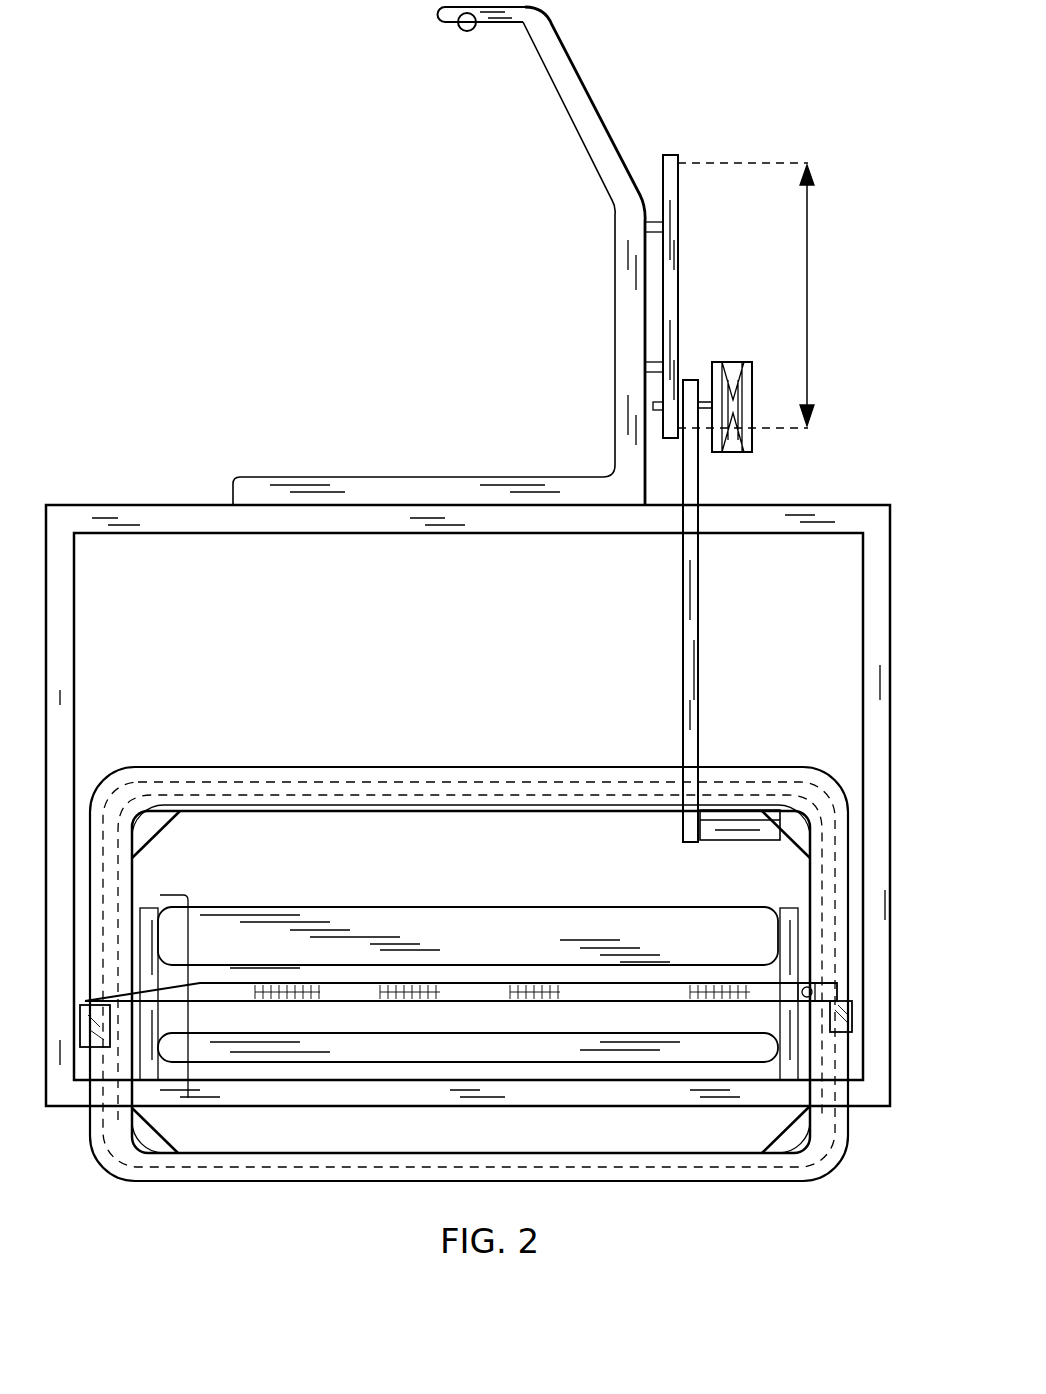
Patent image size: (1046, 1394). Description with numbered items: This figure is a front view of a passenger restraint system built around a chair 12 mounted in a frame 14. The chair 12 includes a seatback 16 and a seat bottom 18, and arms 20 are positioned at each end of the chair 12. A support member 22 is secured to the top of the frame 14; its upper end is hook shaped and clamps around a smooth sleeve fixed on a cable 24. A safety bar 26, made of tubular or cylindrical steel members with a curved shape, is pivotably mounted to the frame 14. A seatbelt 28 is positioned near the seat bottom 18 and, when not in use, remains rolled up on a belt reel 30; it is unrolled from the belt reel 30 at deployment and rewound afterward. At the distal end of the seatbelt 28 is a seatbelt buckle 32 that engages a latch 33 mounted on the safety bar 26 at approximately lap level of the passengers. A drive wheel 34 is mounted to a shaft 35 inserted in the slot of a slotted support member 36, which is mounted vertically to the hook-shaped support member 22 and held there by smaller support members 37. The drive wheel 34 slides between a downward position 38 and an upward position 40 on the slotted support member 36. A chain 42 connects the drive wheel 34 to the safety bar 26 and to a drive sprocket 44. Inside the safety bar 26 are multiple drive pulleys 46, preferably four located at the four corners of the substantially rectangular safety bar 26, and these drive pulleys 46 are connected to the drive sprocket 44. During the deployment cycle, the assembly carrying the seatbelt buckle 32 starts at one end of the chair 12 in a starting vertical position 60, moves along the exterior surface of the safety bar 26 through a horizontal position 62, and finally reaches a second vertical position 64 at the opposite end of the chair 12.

The chair 12 is at (200, 998).
The frame 14 is at (875, 625).
The seatback 16 is at (430, 925).
The seat bottom 18 is at (570, 1045).
The arms 20 is at (802, 1165).
The support member 22 is at (583, 108).
The cable 24 is at (460, 32).
The safety bar 26 is at (262, 768).
The seatbelt 28 is at (470, 995).
The belt reel 30 is at (93, 1035).
The seatbelt buckle 32 is at (805, 983).
The latch 33 is at (848, 1030).
The drive wheel 34 is at (737, 365).
The shaft 35 is at (655, 408).
The slotted support member 36 is at (672, 250).
The smaller support members 37 is at (655, 227).
The downward position 38 is at (764, 425).
The upward position 40 is at (762, 286).
The chain 42 is at (697, 668).
The drive sprocket 44 is at (705, 838).
The drive pulleys 46 is at (130, 795).
The starting vertical position 60 is at (100, 985).
The horizontal position 62 is at (418, 762).
The second vertical position 64 is at (838, 945).